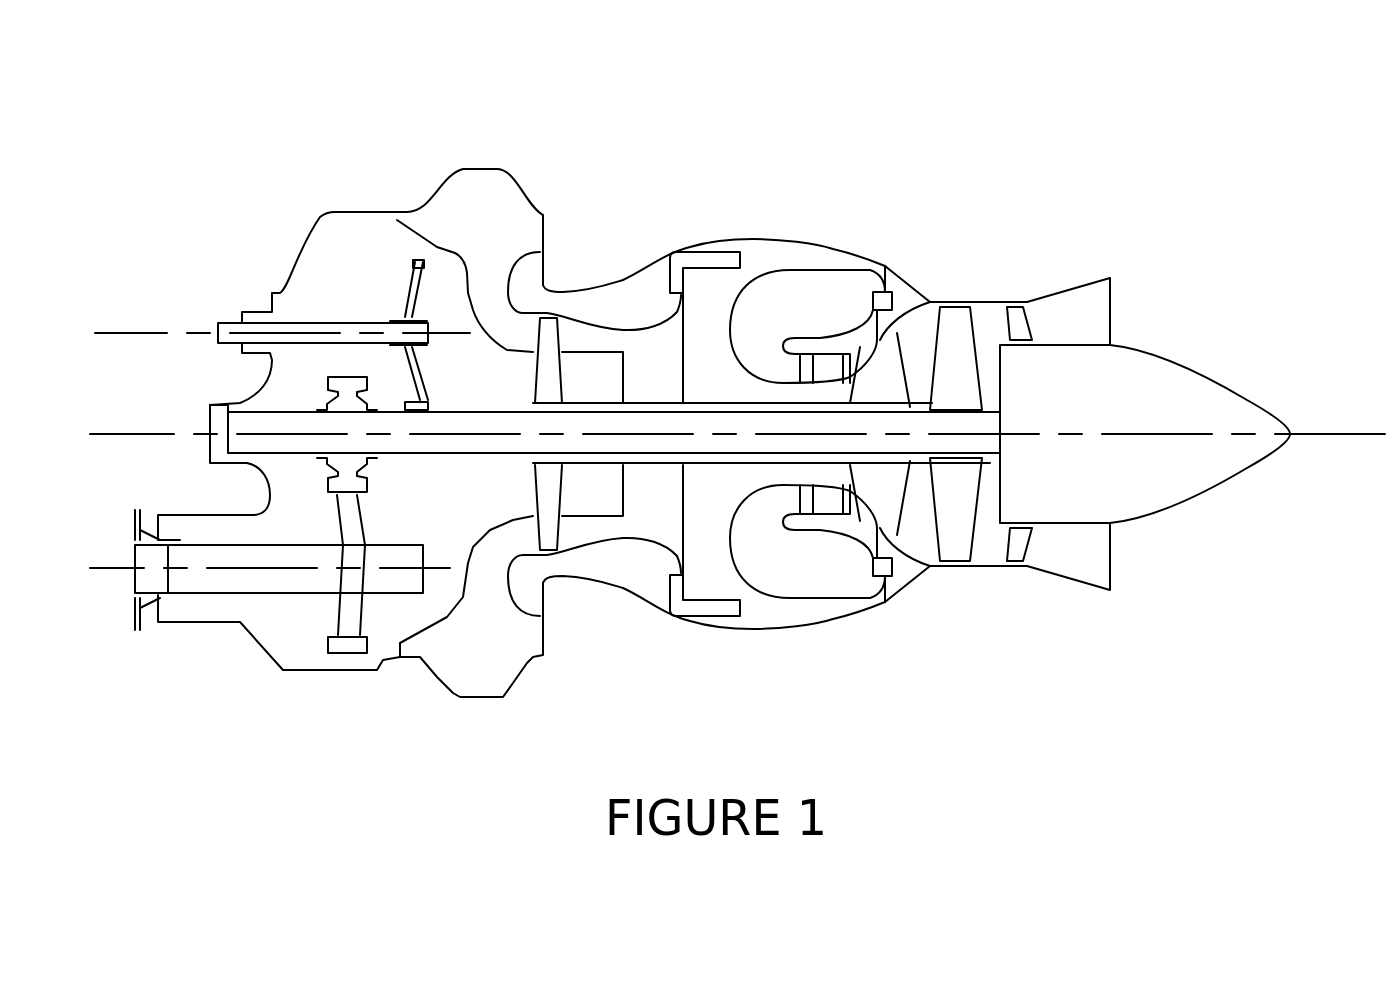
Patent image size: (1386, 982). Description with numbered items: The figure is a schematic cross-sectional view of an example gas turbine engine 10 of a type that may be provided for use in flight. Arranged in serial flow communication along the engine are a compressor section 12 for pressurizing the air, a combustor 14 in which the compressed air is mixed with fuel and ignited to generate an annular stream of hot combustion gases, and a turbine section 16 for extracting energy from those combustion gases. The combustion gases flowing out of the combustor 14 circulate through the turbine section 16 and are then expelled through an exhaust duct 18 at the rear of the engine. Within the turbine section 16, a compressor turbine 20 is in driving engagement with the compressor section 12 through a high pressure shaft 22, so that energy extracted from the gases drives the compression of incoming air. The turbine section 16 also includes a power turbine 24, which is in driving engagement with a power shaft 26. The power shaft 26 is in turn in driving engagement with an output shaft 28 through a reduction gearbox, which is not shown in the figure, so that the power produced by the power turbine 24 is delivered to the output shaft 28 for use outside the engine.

The gas turbine engine 10 is at (1085, 178).
The compressor section 12 is at (653, 360).
The combustor 14 is at (805, 300).
The turbine section 16 is at (915, 525).
The exhaust duct 18 is at (990, 320).
The compressor turbine 20 is at (872, 490).
The high pressure shaft 22 is at (731, 402).
The power turbine 24 is at (955, 330).
The power shaft 26 is at (470, 455).
The output shaft 28 is at (200, 583).